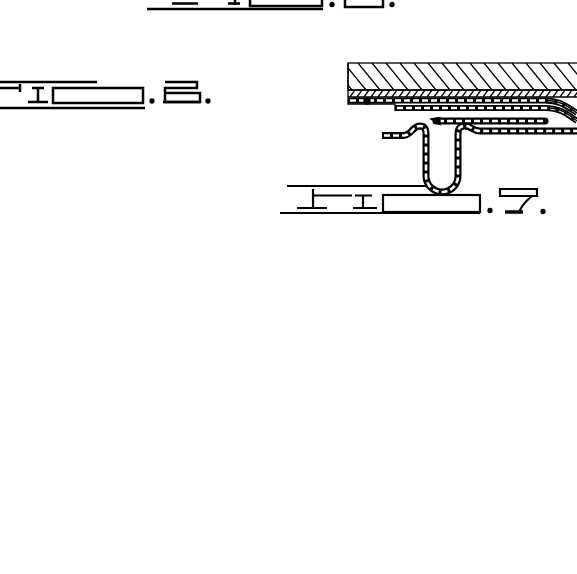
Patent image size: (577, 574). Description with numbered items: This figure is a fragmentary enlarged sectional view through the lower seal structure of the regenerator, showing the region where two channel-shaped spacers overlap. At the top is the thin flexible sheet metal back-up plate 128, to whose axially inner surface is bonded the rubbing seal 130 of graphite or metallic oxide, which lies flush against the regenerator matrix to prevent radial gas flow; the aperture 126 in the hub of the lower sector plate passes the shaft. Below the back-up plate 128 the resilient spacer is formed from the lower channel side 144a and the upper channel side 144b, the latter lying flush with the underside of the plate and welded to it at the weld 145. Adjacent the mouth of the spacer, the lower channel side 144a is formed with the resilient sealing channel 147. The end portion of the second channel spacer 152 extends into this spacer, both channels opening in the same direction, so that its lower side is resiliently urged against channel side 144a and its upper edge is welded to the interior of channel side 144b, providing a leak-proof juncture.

The rubbing seal 130 is at (453, 63).
The back-up plate 128 is at (347, 92).
The upper channel side 144b is at (367, 100).
The weld 145 is at (367, 100).
The channel spacer 152 is at (422, 116).
The aperture 126 is at (562, 80).
The lower channel side 144a is at (543, 125).
The resilient sealing channel 147 is at (420, 156).